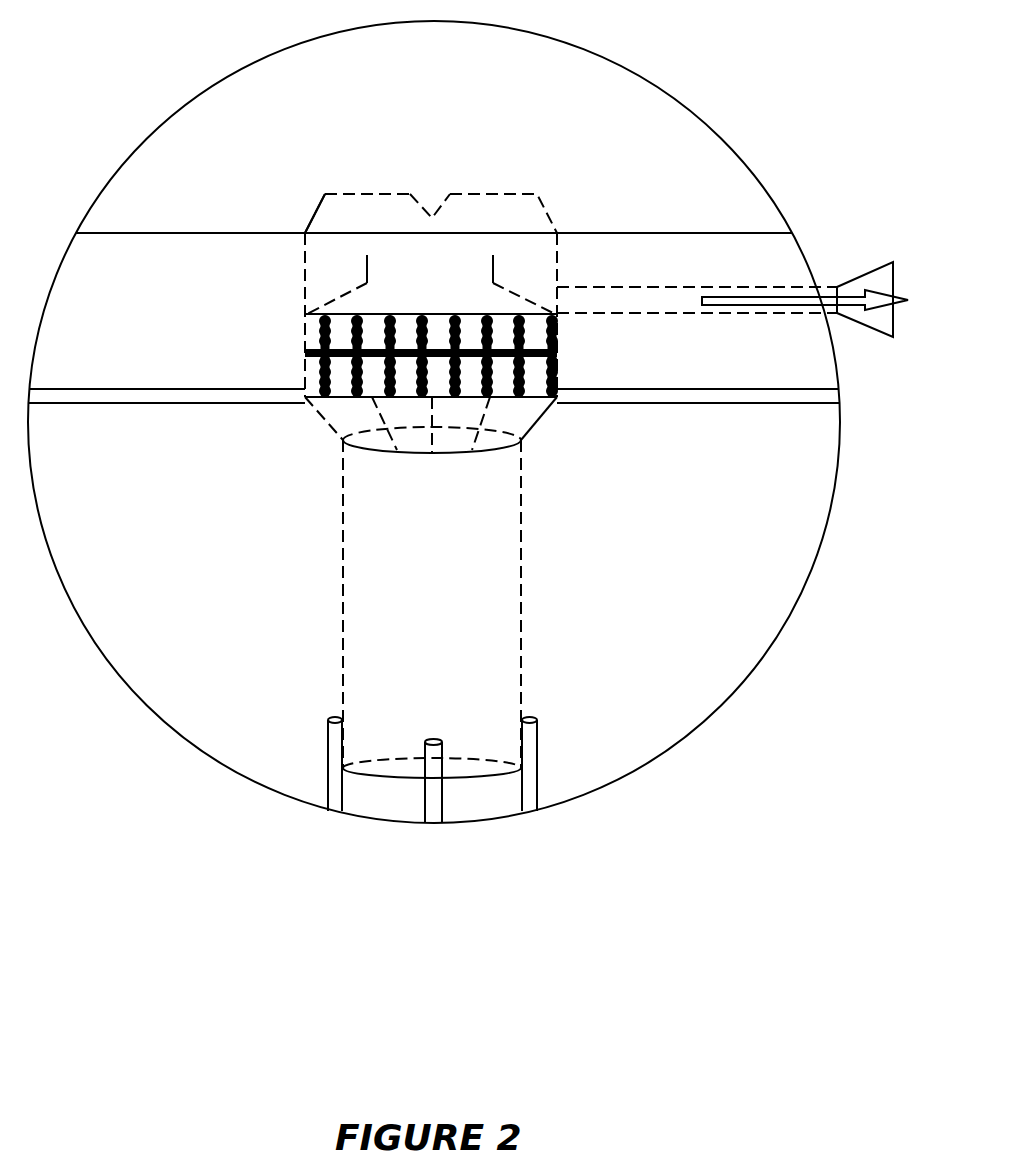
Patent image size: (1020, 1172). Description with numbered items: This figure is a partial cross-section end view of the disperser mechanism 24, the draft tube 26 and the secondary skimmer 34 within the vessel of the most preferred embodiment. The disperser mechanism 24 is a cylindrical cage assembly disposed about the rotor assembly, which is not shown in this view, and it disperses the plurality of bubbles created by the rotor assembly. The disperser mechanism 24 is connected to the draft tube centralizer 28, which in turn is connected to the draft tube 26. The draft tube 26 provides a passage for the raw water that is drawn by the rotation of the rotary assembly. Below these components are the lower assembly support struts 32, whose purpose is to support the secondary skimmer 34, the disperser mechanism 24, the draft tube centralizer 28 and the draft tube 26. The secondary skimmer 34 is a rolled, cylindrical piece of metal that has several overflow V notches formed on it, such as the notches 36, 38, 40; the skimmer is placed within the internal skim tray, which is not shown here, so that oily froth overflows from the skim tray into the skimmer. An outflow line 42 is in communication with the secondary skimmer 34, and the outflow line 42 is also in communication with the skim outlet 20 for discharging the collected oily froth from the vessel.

The skim outlet 20 is at (840, 287).
The disperser mechanism 24 is at (323, 373).
The draft tube 26 is at (522, 600).
The draft tube centralizer 28 is at (537, 420).
The lower assembly support struts 32 is at (530, 797).
The secondary skimmer 34 is at (528, 260).
The notch 36 is at (665, 92).
The notch 38 is at (429, 207).
The notch 40 is at (310, 217).
The outflow line 42 is at (743, 287).